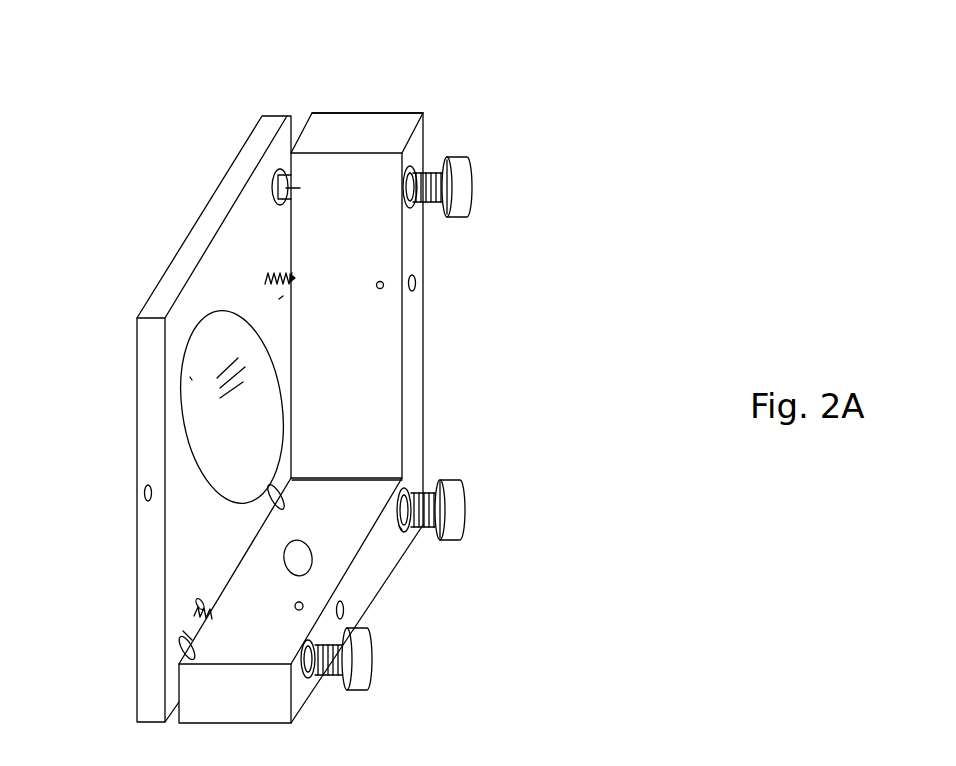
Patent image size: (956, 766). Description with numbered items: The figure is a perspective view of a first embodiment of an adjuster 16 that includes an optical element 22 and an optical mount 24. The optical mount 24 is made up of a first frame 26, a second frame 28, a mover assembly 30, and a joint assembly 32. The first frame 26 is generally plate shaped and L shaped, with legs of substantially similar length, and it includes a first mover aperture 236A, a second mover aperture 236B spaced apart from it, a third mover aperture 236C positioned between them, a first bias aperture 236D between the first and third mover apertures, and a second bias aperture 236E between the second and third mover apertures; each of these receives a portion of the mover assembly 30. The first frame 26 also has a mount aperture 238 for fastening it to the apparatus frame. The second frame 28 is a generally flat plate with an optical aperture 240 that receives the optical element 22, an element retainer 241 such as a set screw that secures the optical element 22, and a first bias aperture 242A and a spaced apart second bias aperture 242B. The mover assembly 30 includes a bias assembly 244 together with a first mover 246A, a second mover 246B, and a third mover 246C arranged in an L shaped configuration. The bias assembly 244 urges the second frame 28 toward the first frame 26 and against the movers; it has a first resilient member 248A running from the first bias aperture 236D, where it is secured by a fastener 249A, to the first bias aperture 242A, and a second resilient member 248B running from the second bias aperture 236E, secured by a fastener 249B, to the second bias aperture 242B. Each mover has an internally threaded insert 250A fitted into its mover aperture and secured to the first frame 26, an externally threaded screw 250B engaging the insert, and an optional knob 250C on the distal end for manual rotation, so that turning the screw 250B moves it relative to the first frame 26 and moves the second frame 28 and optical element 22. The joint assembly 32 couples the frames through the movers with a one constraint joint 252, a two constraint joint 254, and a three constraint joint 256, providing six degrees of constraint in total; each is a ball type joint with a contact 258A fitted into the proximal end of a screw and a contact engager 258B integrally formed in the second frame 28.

The adjuster 16 is at (422, 101).
The optical element 22 is at (200, 418).
The optical mount 24 is at (392, 133).
The first frame 26 is at (371, 124).
The second frame 28 is at (193, 243).
The mover assembly 30 is at (461, 205).
The joint assembly 32 is at (187, 634).
The first mover aperture 236A is at (410, 162).
The second mover aperture 236B is at (311, 684).
The third mover aperture 236C is at (400, 528).
The first bias aperture 236D is at (418, 279).
The second bias aperture 236E is at (346, 609).
The mount aperture 238 is at (313, 560).
The optical aperture 240 is at (190, 377).
The element retainer 241 is at (144, 493).
The first bias aperture 242A is at (263, 276).
The second bias aperture 242B is at (194, 612).
The bias assembly 244 is at (296, 277).
The first mover 246A is at (461, 166).
The second mover 246B is at (373, 679).
The third mover 246C is at (462, 524).
The first resilient member 248A is at (279, 299).
The second resilient member 248B is at (199, 600).
The fastener 249A is at (384, 289).
The fastener 249B is at (296, 610).
The threaded insert 250A is at (417, 480).
The screw 250B is at (416, 492).
The knob 250C is at (458, 496).
The one constraint joint 252 is at (283, 188).
The two constraint joint 254 is at (181, 652).
The three constraint joint 256 is at (286, 505).
The contact 258A is at (272, 187).
The contact engager 258B is at (273, 172).